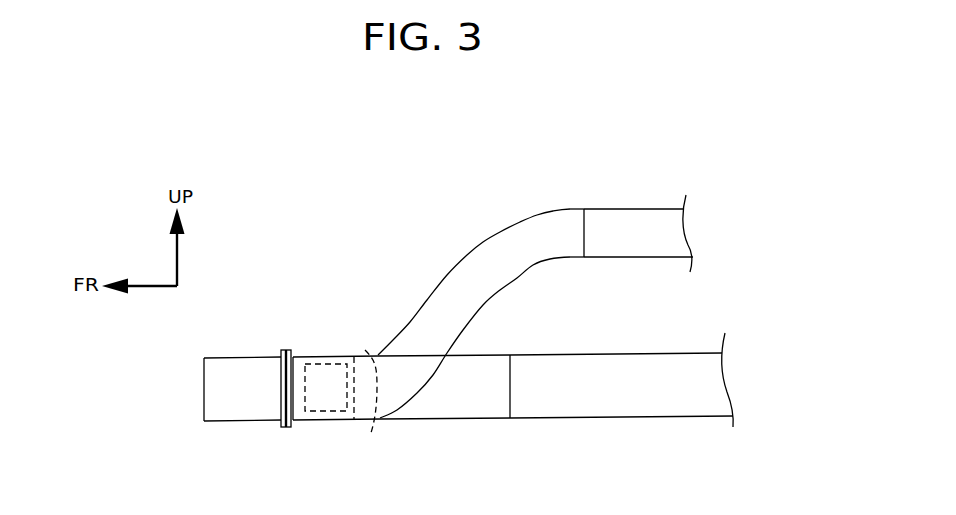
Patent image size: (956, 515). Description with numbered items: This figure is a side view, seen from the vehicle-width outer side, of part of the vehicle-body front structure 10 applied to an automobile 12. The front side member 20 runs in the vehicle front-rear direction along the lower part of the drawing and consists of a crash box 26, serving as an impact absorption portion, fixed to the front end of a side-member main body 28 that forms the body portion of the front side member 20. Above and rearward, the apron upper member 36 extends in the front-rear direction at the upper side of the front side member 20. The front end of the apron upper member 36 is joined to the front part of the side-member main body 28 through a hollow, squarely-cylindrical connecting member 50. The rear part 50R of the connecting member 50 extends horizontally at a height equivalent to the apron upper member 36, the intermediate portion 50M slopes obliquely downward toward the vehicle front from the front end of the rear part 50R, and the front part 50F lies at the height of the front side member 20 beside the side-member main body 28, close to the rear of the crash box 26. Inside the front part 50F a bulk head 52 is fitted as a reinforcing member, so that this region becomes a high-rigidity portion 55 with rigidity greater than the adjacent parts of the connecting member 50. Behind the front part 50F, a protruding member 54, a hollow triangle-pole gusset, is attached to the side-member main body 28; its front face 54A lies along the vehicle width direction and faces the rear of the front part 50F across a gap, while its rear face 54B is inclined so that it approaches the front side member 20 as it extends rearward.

The vehicle-body front structure 10 is at (334, 232).
The automobile 12 is at (622, 139).
The front side member 20 is at (652, 424).
The crash box 26 is at (245, 357).
The side-member main body 28 is at (565, 417).
The apron upper member 36 is at (645, 208).
The connecting member 50 is at (493, 221).
The front part 50F is at (324, 420).
The intermediate portion 50M is at (450, 275).
The rear part 50R is at (550, 211).
The bulk head 52 is at (318, 363).
The protruding member 54 is at (442, 427).
The front face 54A is at (365, 350).
The rear face 54B is at (477, 403).
The high-rigidity portion 55 is at (313, 398).